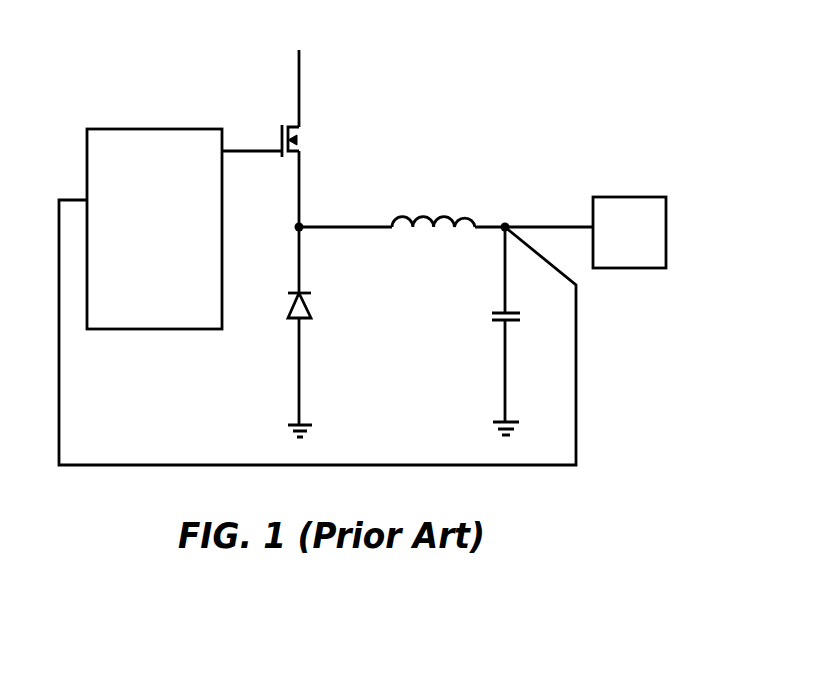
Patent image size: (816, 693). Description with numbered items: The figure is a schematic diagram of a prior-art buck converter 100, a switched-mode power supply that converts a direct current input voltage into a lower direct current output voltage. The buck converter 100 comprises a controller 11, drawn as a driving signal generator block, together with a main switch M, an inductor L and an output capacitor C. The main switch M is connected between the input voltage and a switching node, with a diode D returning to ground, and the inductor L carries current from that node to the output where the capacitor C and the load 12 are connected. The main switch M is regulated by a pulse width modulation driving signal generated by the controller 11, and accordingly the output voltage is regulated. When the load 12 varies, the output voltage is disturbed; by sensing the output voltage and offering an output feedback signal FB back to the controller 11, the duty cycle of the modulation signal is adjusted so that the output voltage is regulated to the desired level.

The buck converter 100 is at (366, 238).
The controller 11 is at (118, 127).
The load 12 is at (617, 200).